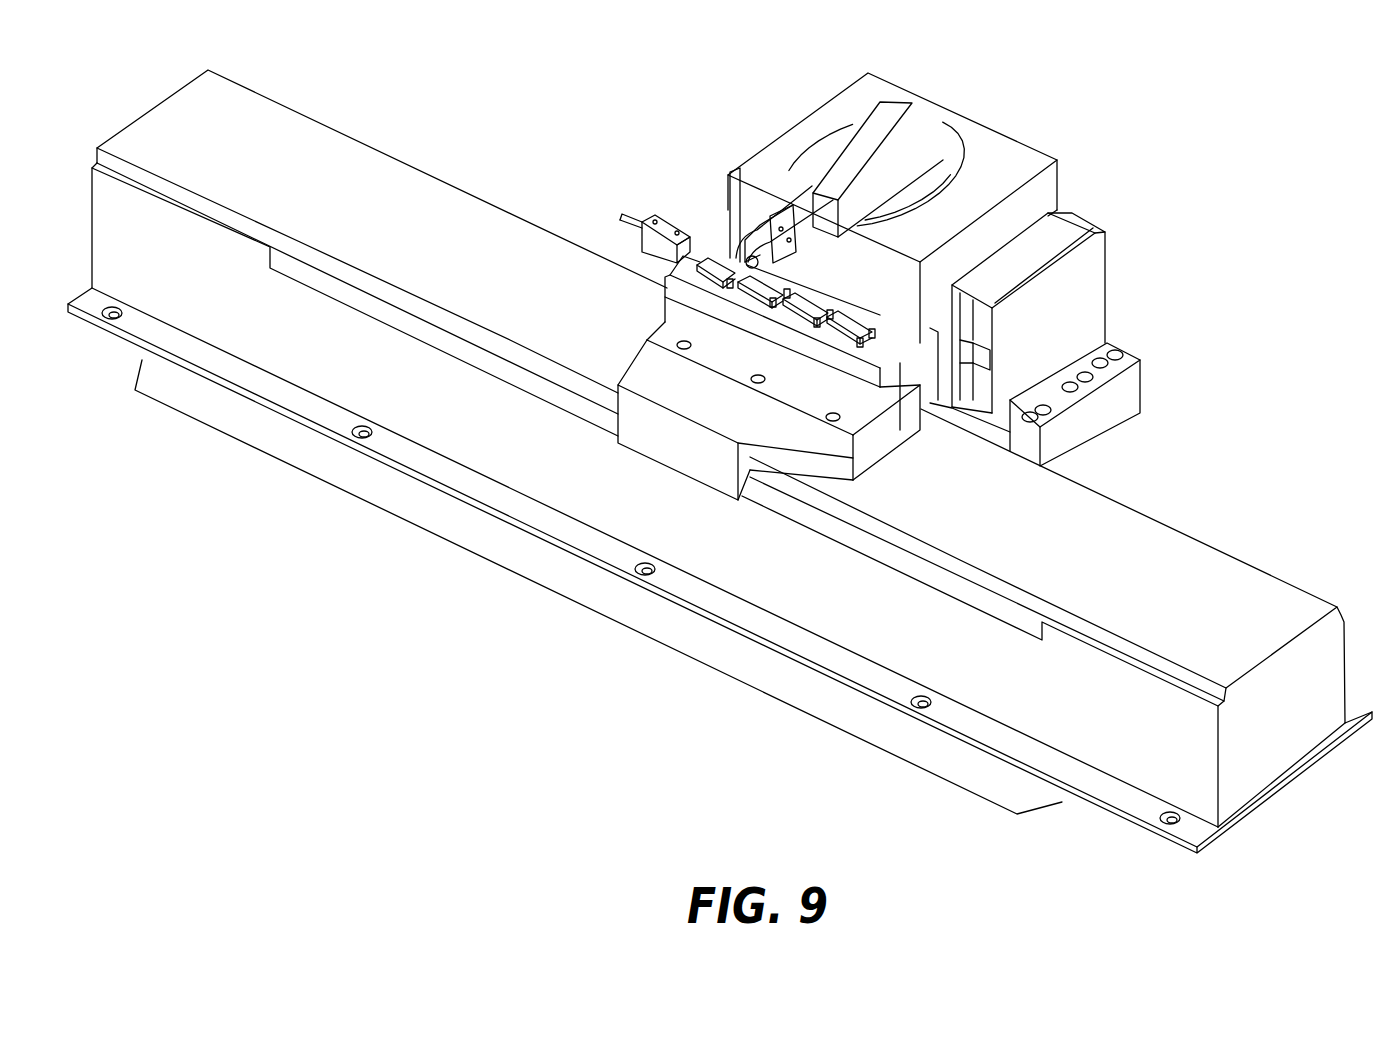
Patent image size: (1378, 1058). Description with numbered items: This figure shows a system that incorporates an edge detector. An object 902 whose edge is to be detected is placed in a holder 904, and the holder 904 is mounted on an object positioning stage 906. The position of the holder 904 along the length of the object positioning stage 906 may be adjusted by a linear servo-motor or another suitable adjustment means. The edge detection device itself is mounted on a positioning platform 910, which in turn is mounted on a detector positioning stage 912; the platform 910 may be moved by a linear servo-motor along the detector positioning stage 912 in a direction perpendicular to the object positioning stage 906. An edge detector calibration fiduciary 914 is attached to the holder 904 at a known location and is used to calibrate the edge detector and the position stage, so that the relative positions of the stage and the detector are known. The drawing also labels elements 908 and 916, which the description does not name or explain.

The object 902 is at (720, 262).
The holder 904 is at (747, 340).
The object positioning stage 906 is at (572, 596).
The sensor head 908 is at (780, 195).
The positioning platform 910 is at (945, 142).
The detector positioning stage 912 is at (1182, 304).
The edge detector calibration fiduciary 914 is at (627, 215).
The bracket 916 is at (740, 255).